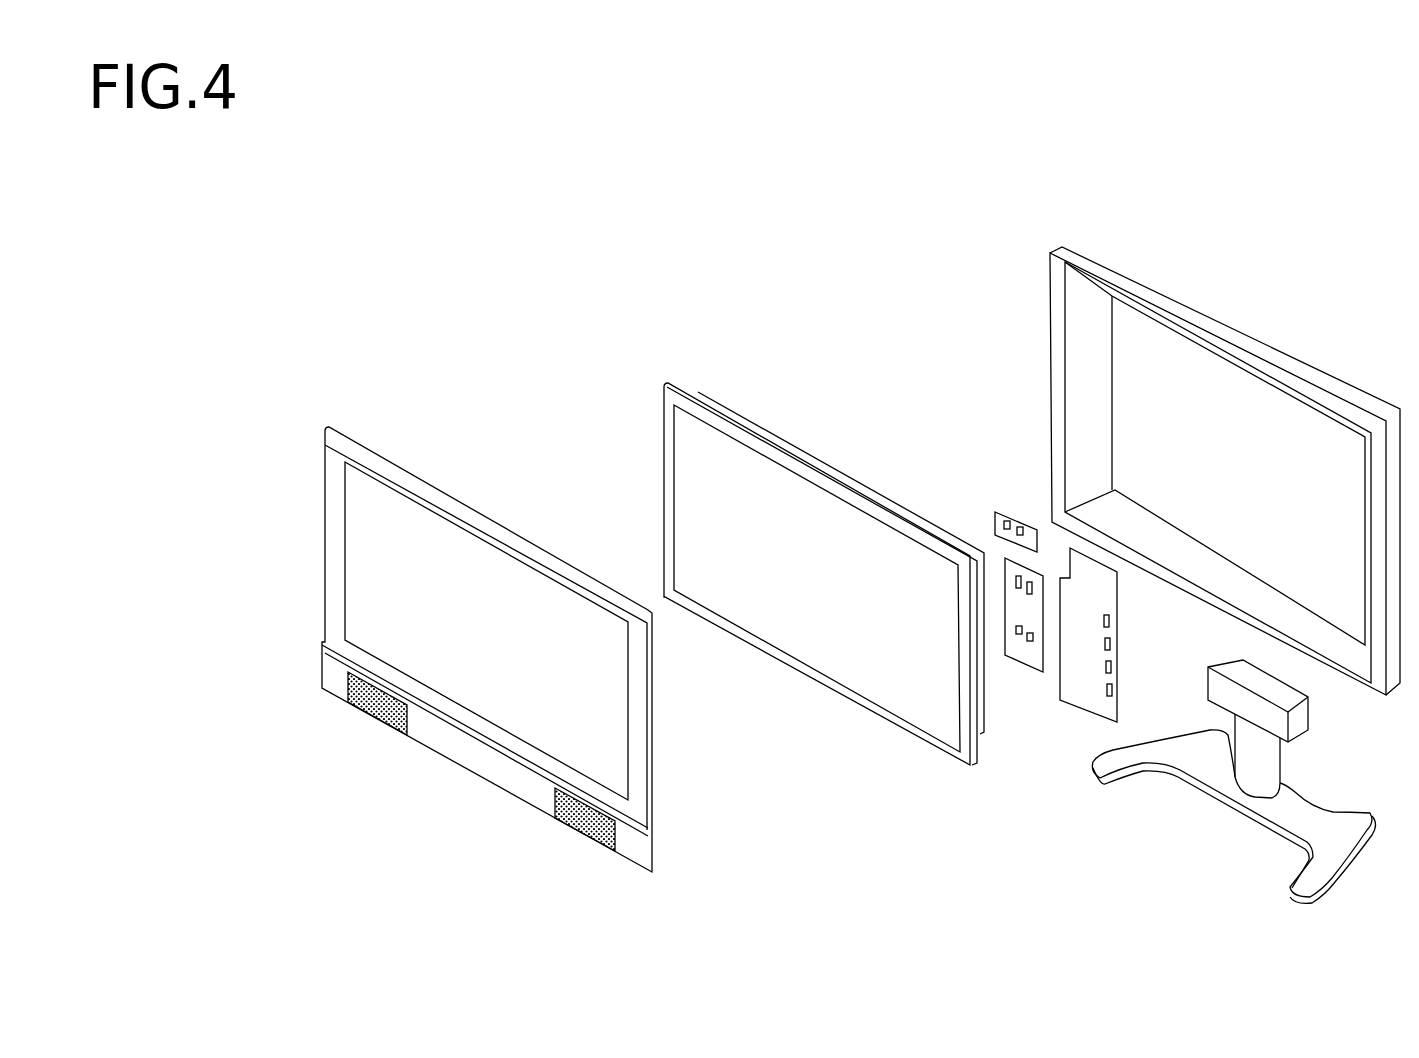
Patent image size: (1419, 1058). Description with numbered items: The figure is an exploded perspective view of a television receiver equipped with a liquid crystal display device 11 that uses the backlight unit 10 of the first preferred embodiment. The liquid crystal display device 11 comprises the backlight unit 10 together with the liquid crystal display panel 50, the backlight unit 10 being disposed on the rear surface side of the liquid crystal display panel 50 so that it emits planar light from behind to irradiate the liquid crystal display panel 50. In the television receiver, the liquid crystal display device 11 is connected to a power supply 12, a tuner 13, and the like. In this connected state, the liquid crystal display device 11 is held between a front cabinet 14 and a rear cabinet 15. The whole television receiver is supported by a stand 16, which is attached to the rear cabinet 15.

The backlight unit 10 is at (722, 402).
The liquid crystal display device 11 is at (672, 366).
The power supply 12 is at (1086, 692).
The tuner 13 is at (1000, 508).
The front cabinet 14 is at (332, 467).
The rear cabinet 15 is at (1142, 270).
The stand 16 is at (1098, 775).
The liquid crystal display panel 50 is at (670, 422).